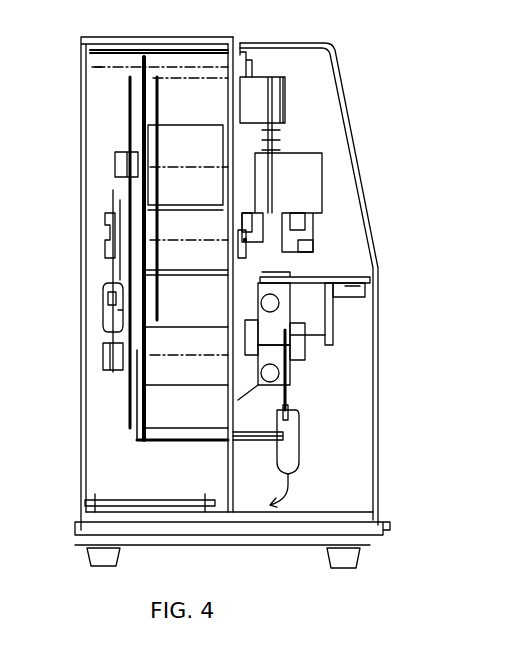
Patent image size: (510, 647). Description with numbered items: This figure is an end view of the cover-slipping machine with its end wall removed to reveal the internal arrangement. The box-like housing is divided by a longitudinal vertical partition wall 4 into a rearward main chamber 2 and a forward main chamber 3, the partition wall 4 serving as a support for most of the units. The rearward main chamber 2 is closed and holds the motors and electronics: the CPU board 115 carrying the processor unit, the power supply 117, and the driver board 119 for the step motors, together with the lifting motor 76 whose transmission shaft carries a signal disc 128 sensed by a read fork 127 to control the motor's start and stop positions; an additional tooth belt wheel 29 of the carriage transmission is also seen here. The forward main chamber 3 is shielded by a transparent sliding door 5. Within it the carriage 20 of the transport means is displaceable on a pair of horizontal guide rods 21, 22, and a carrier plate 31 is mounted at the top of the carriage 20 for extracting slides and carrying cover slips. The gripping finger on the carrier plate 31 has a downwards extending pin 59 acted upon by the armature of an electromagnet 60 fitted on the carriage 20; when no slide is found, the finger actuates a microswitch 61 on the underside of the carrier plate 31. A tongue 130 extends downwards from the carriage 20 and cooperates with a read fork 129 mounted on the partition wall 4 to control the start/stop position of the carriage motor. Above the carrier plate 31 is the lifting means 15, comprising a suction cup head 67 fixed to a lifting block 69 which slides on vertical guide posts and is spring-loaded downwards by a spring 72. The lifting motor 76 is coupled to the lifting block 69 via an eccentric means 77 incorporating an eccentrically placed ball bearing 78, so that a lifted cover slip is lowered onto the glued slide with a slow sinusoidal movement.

The rearward main chamber 2 is at (152, 488).
The forward main chamber 3 is at (332, 493).
The partition wall 4 is at (228, 462).
The sliding door 5 is at (352, 102).
The lifting means 15 is at (338, 196).
The carriage 20 is at (283, 368).
The guide rod 21 is at (243, 305).
The guide rod 22 is at (245, 392).
The additional tooth belt wheel 29 is at (118, 372).
The carrier plate 31 is at (308, 275).
The pin 59 is at (333, 322).
The electromagnet 60 is at (297, 345).
The microswitch 61 is at (378, 296).
The suction cup head 67 is at (323, 172).
The lifting block 69 is at (277, 173).
The spring 72 is at (280, 133).
The lifting motor 76 is at (183, 135).
The eccentric means 77 is at (243, 249).
The ball bearing 78 is at (251, 220).
The CPU board 115 is at (137, 137).
The power supply 117 is at (160, 92).
The driver board 119 is at (95, 500).
The read fork 127 is at (108, 318).
The signal disc 128 is at (120, 213).
The read fork 129 is at (297, 442).
The tongue 130 is at (293, 400).